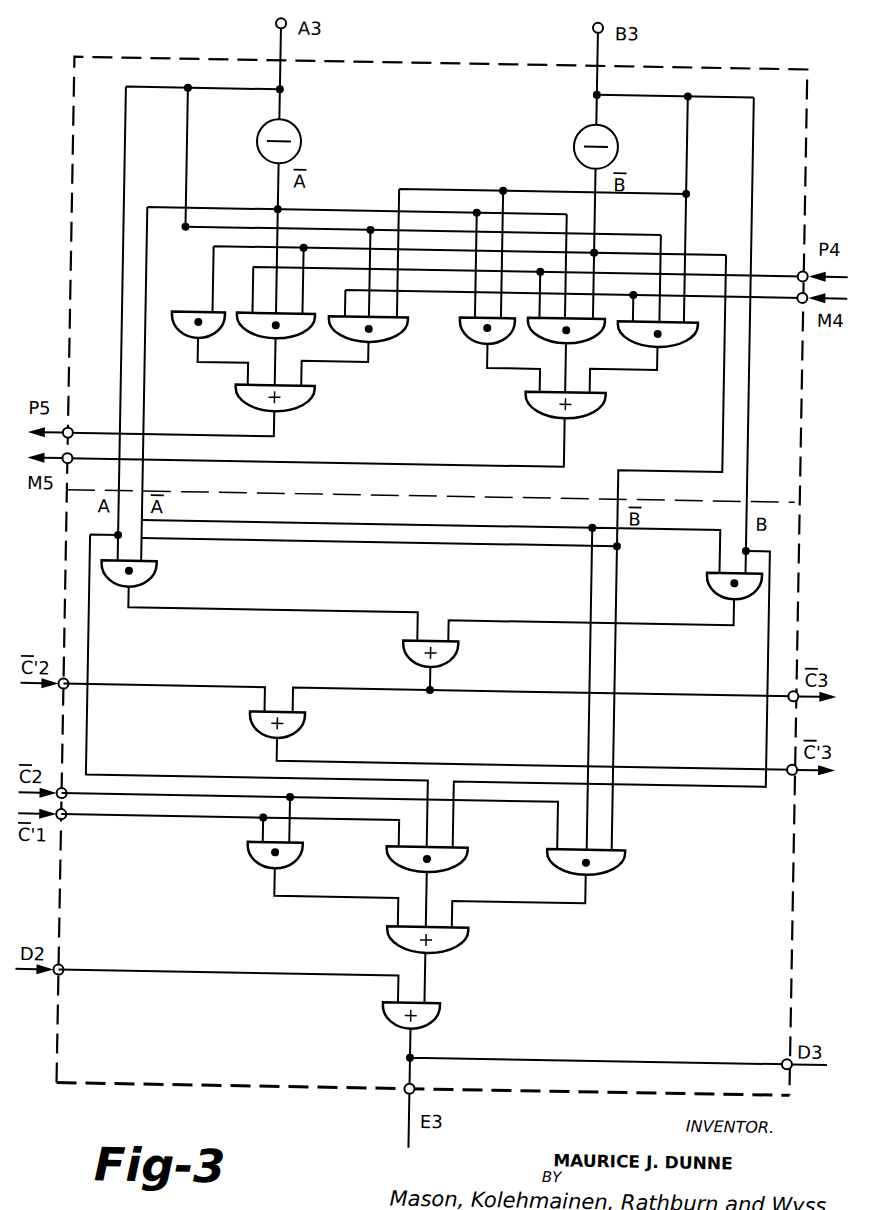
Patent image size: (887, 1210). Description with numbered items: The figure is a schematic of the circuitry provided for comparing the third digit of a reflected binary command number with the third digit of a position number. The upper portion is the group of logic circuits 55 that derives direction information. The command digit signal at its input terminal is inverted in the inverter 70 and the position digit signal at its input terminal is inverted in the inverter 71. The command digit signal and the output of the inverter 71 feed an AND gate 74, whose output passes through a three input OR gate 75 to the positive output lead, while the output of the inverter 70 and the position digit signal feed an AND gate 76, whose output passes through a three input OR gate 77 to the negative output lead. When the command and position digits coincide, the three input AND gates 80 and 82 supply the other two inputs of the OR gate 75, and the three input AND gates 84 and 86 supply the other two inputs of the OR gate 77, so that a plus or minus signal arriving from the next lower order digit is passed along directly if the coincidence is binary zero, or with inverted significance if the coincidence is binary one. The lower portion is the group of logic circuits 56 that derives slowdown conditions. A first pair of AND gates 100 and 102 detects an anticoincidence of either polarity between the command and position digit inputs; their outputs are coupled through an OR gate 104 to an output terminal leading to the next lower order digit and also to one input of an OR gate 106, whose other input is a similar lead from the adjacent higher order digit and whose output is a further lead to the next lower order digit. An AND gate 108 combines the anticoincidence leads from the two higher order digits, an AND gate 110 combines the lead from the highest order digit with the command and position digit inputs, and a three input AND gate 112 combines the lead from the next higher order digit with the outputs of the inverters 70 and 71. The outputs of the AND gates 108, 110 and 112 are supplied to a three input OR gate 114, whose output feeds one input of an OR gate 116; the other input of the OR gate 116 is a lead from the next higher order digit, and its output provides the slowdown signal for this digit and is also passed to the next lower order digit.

The logic circuits 55 is at (696, 64).
The logic circuits 56 is at (258, 1095).
The inverter 70 is at (293, 133).
The inverter 71 is at (566, 147).
The AND gate 74 is at (180, 340).
The OR gate 75 is at (300, 408).
The AND gate 76 is at (468, 342).
The OR gate 77 is at (540, 412).
The three input AND gate 80 is at (246, 342).
The three input AND gate 82 is at (342, 344).
The three input AND gate 84 is at (545, 342).
The three input AND gate 86 is at (634, 344).
The AND gate 100 is at (153, 580).
The AND gate 102 is at (710, 580).
The OR gate 104 is at (452, 660).
The OR gate 106 is at (300, 732).
The AND gate 108 is at (259, 866).
The AND gate 110 is at (462, 866).
The three input AND gate 112 is at (620, 866).
The three input OR gate 114 is at (464, 946).
The OR gate 116 is at (440, 1022).